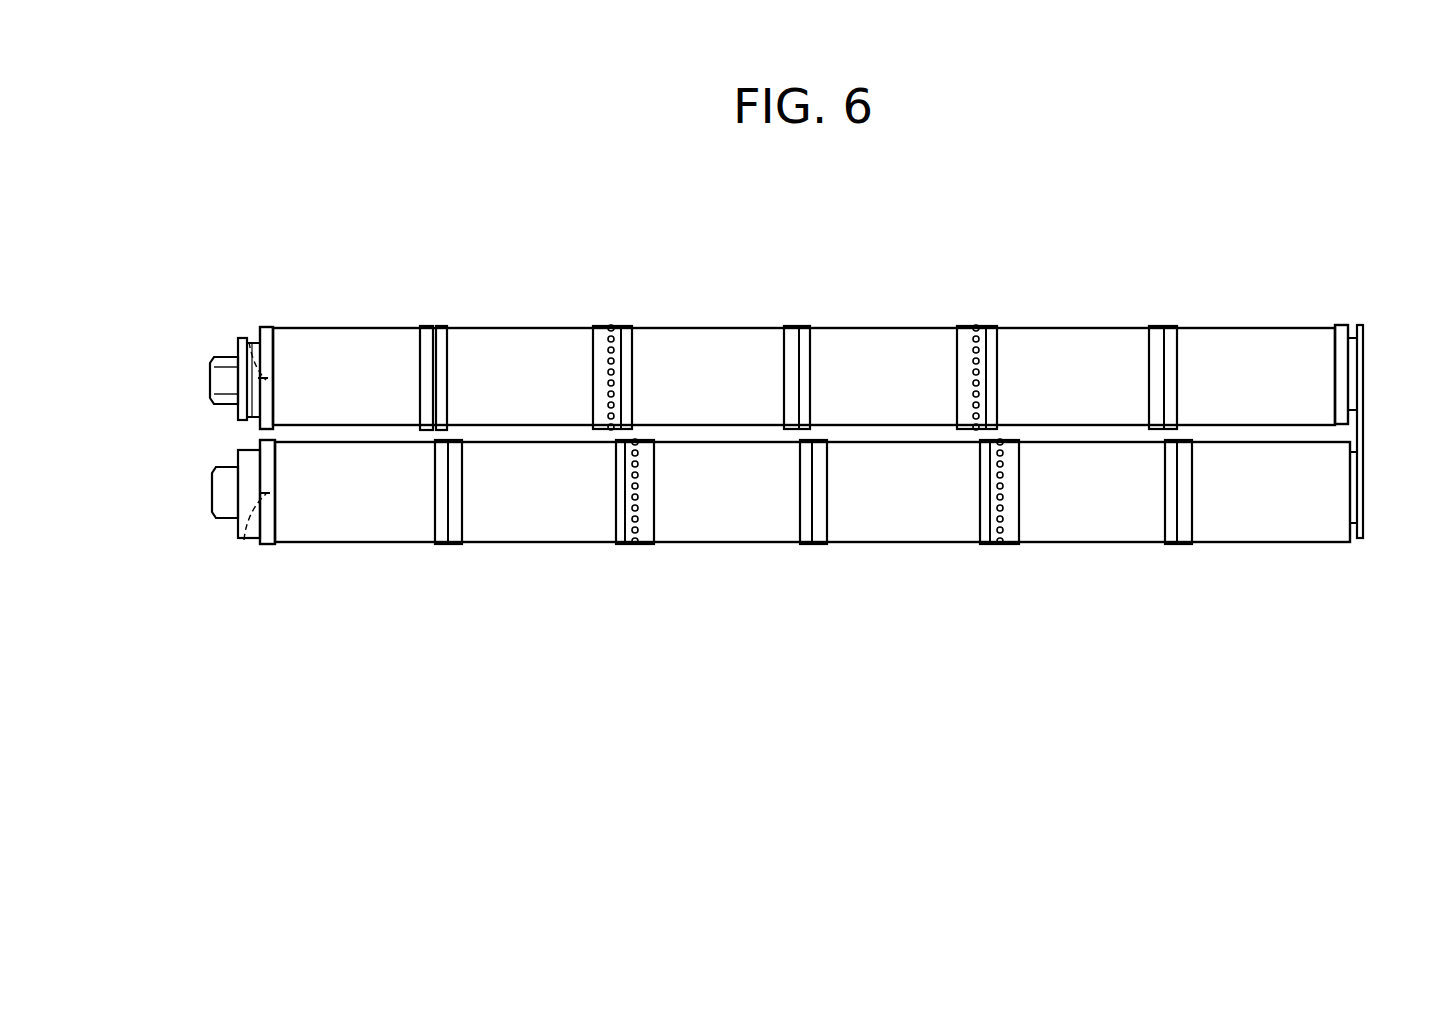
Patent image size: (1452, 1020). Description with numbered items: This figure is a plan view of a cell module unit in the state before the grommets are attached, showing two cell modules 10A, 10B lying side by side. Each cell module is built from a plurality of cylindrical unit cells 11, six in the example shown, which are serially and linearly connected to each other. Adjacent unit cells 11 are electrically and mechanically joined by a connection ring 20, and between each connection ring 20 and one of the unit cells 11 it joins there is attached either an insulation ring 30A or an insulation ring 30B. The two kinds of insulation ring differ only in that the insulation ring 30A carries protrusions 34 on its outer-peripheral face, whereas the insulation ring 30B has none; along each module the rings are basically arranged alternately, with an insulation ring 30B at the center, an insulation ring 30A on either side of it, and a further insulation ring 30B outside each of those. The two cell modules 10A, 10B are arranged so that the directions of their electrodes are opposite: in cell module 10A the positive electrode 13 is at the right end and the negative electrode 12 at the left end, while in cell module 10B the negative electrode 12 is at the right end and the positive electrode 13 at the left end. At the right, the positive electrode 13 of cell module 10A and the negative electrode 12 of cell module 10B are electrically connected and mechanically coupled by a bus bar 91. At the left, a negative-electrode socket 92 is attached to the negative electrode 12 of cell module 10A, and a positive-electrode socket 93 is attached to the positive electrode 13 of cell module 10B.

The cell module 10A is at (804, 452).
The cell module 10B is at (535, 544).
The unit cell 11 is at (347, 328).
The negative electrode 12 is at (248, 340).
The positive electrode 13 is at (1343, 374).
The connection ring 20 is at (806, 326).
The insulation ring 30A is at (968, 326).
The insulation ring 30B is at (790, 326).
The protrusion 34 is at (976, 326).
The bus bar 91 is at (1365, 428).
The negative-electrode socket 92 is at (210, 378).
The positive-electrode socket 93 is at (210, 492).